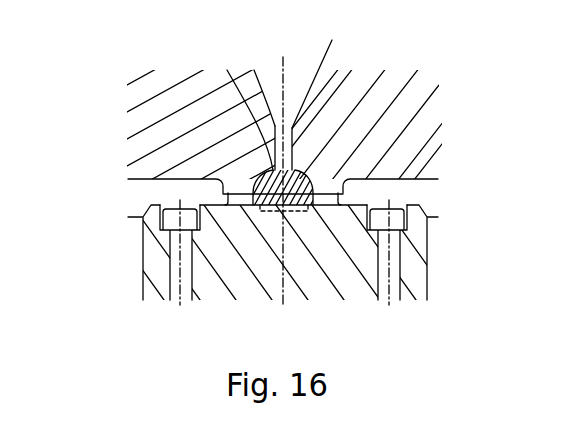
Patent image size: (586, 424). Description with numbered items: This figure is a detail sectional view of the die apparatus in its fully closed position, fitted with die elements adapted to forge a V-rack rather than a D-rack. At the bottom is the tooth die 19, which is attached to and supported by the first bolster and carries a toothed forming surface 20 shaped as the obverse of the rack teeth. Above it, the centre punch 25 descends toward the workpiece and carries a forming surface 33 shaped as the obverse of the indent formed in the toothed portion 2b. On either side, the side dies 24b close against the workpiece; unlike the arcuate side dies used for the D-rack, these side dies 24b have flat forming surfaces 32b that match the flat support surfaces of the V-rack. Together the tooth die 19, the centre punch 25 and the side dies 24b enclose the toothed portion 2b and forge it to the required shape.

The right base member 2b is at (352, 180).
The centre punch 25 is at (292, 88).
The flat forming surfaces 32b is at (268, 172).
The forming surface 33 is at (272, 173).
The toothed forming surface 20 is at (272, 212).
The side dies 24b is at (143, 172).
The tooth die 19 is at (338, 280).